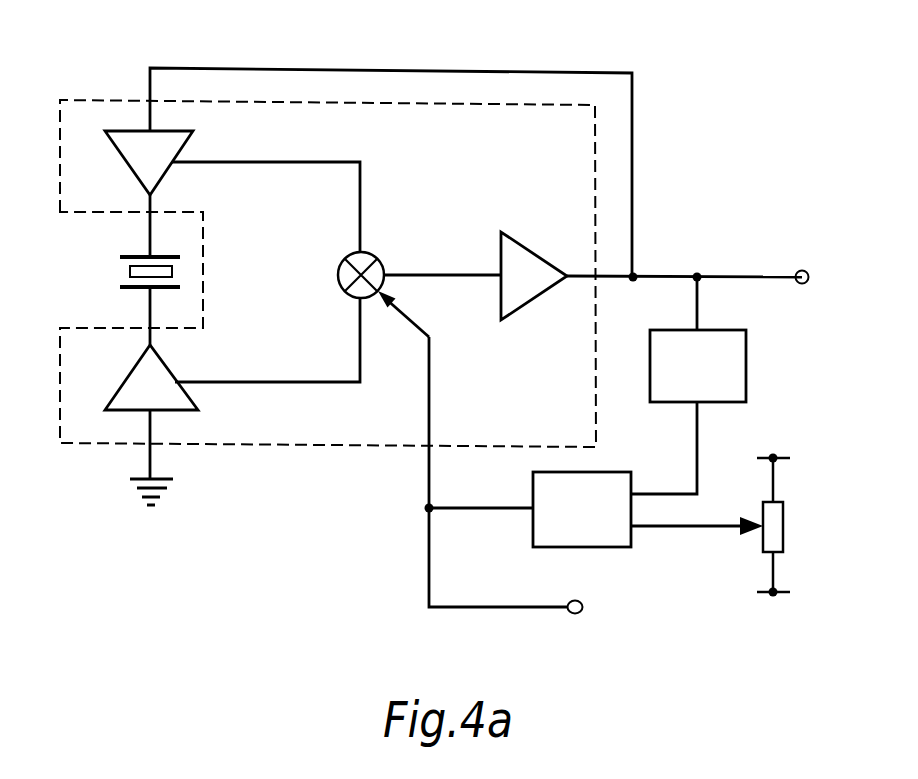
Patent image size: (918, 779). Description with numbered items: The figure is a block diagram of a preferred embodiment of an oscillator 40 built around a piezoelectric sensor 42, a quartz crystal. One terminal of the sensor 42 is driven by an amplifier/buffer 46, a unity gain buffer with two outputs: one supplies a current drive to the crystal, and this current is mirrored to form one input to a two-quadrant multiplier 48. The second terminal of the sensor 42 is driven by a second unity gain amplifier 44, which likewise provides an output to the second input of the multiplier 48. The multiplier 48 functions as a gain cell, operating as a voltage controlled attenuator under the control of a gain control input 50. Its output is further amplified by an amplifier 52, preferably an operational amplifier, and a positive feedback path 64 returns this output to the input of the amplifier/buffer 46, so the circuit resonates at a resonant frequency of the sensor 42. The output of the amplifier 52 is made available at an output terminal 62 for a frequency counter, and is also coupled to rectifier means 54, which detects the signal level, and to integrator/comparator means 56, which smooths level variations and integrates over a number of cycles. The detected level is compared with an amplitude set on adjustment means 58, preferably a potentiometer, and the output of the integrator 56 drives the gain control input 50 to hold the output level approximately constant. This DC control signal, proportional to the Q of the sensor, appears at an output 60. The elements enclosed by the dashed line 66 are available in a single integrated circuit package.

The oscillator 40 is at (246, 540).
The piezoelectric sensor 42 is at (130, 271).
The amplifier 44 is at (128, 378).
The amplifier/buffer 46 is at (125, 165).
The two-quadrant multiplier 48 is at (370, 253).
The gain control input 50 is at (429, 337).
The amplifier 52 is at (520, 258).
The rectifier means 54 is at (688, 384).
The integrator/comparator means 56 is at (648, 509).
The adjustment means 58 is at (785, 523).
The output 60 is at (572, 615).
The output terminal 62 is at (797, 270).
The positive feedback path 64 is at (550, 72).
The dashed line 66 is at (104, 100).